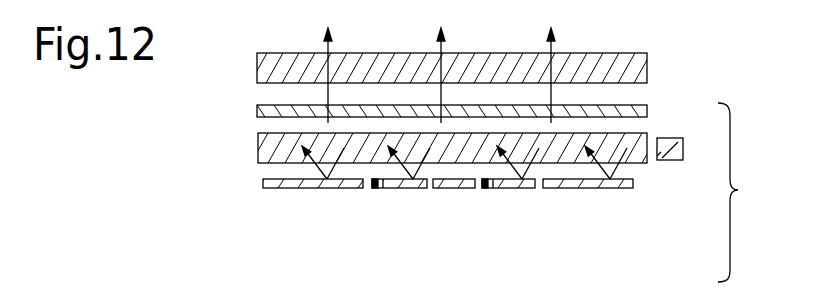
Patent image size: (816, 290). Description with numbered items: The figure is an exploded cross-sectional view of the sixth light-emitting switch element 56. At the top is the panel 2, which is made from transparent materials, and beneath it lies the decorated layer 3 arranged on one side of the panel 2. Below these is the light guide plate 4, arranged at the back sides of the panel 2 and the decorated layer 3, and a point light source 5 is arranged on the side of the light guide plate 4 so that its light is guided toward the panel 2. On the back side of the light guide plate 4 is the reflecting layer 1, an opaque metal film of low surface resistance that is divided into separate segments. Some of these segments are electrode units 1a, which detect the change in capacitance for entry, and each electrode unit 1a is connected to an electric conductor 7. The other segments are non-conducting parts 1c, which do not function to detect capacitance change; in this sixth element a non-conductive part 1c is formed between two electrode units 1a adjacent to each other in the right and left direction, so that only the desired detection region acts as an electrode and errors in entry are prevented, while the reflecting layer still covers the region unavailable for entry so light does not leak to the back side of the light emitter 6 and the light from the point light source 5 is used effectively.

The reflecting layer 1 is at (452, 234).
The electrode unit 1a is at (408, 189).
The non-conducting part 1c is at (323, 189).
The panel 2 is at (630, 62).
The decorated layer 3 is at (643, 108).
The light guide plate 4 is at (643, 133).
The point light source 5 is at (673, 150).
The light emitter 6 is at (740, 192).
The electric conductor 7 is at (372, 190).
The sixth light-emitting switch element 56 is at (460, 54).